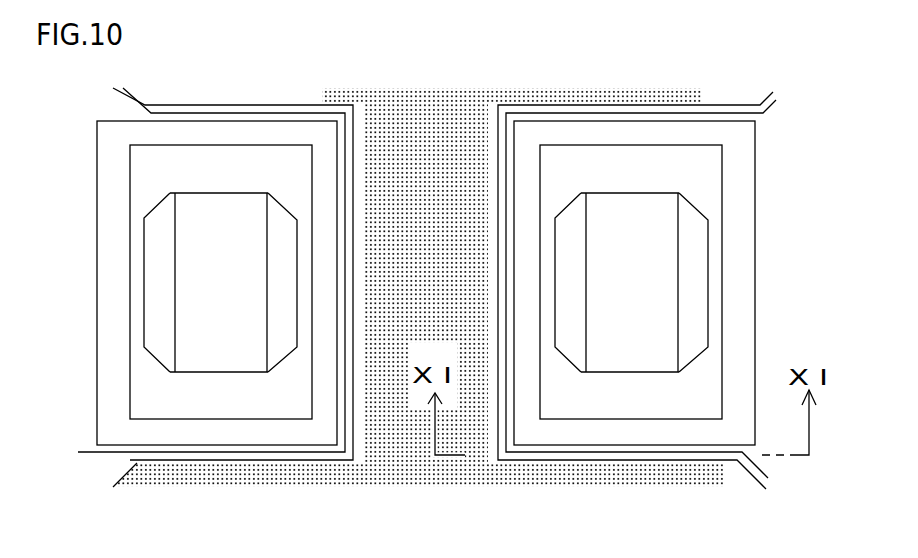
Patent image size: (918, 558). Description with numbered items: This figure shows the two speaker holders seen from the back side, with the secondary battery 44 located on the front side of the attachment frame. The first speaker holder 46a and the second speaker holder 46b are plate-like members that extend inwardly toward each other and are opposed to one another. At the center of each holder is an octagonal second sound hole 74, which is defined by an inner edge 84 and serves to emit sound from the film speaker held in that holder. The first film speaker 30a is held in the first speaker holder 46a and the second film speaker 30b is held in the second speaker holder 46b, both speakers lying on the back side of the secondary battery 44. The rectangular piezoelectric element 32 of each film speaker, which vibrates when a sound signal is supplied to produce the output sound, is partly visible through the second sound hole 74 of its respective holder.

The piezoelectric element 32 is at (211, 198).
The inner edge 84 is at (148, 250).
The first film speaker 30a is at (577, 253).
The second film speaker 30b is at (280, 283).
The second sound hole 74 is at (283, 245).
The secondary battery 44 is at (408, 466).
The first speaker holder 46a is at (637, 463).
The second speaker holder 46b is at (193, 462).